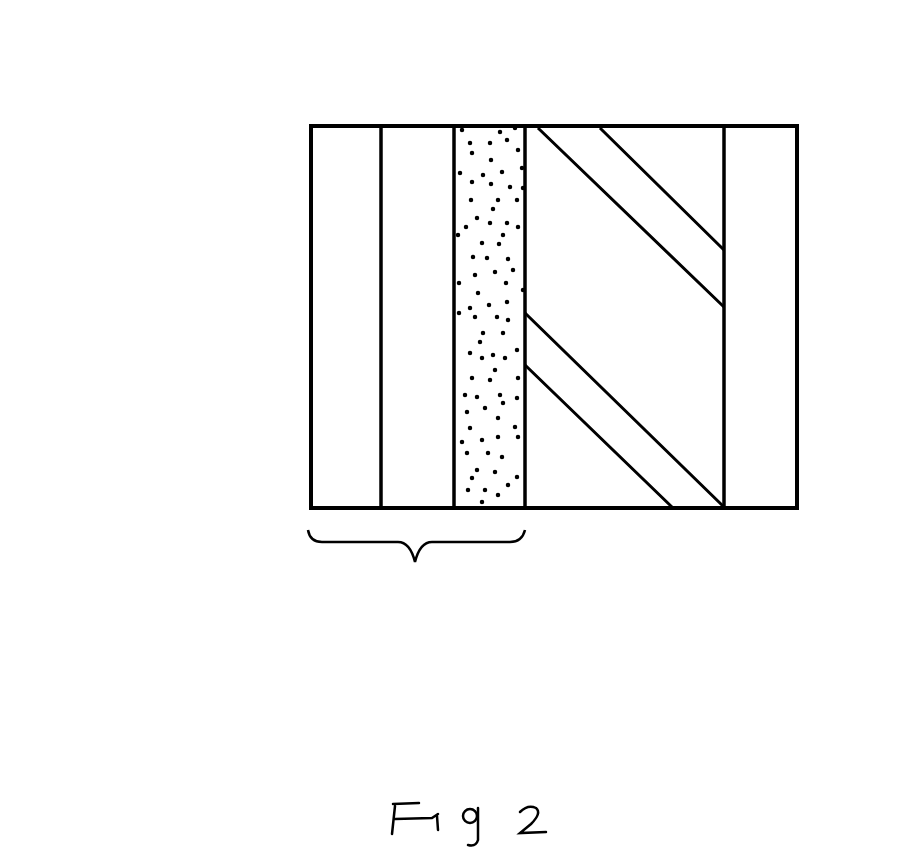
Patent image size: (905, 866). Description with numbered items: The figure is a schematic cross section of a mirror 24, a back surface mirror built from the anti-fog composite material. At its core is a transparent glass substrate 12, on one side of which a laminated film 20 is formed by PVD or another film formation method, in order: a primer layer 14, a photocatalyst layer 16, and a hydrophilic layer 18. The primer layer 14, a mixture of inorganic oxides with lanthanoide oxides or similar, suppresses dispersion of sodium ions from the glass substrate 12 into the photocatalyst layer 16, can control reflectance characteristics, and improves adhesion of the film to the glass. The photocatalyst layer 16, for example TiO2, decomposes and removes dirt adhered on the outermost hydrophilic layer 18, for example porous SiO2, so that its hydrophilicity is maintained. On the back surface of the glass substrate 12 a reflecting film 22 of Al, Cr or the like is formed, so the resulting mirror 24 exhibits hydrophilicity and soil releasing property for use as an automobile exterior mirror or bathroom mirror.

The transparent glass substrate 12 is at (596, 170).
The primer layer 14 is at (483, 173).
The photocatalyst layer 16 is at (426, 168).
The hydrophilic layer 18 is at (356, 172).
The laminated film 20 is at (416, 569).
The reflecting film 22 is at (757, 163).
The mirror 24 is at (213, 118).